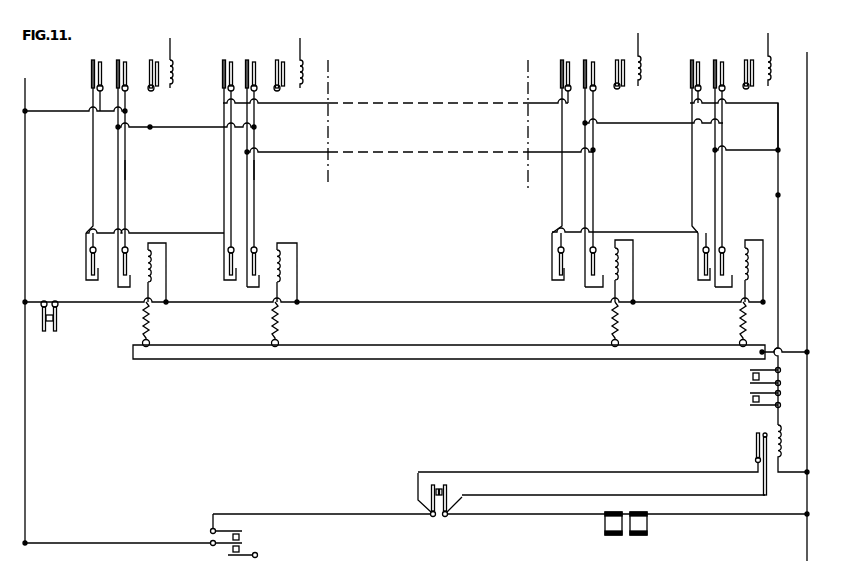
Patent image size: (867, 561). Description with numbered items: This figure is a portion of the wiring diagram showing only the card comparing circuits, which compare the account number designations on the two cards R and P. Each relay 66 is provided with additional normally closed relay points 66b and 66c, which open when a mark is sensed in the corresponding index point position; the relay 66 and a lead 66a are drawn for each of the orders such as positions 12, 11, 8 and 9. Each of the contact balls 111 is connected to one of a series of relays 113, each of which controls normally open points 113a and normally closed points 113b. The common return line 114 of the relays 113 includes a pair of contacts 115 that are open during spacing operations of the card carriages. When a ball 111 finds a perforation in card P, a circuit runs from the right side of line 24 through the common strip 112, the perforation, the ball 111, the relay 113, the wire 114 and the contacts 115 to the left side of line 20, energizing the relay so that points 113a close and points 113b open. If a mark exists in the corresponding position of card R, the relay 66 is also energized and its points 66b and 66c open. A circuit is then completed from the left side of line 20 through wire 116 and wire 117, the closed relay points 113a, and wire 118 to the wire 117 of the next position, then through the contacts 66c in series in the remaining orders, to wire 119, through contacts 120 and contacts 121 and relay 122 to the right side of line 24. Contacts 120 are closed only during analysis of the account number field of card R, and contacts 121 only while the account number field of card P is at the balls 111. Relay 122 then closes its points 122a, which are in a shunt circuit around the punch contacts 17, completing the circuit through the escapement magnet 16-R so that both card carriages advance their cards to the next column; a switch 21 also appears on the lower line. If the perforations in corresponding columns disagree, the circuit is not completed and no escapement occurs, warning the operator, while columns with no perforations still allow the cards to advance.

The index point position 12 is at (120, 134).
The index point position 11 is at (250, 62).
The index point position 8 is at (596, 153).
The index point position 9 is at (731, 153).
The relay 66 is at (176, 72).
The relay lead 66a is at (154, 60).
The normally closed relay points 66b is at (93, 62).
The normally closed relay points 66c is at (118, 62).
The wire 116 is at (63, 112).
The wire 117 is at (126, 171).
The wire 118 is at (151, 129).
The wire 119 is at (778, 195).
The relay 113 is at (152, 258).
The normally open relay points 113a is at (133, 272).
The normally closed relay points 113b is at (90, 277).
The common return line 114 is at (189, 299).
The contacts 115 is at (50, 333).
The contact balls 111 is at (272, 342).
The common strip 112 is at (213, 358).
The contacts 120 is at (748, 378).
The contacts 121 is at (748, 400).
The relay 122 is at (783, 470).
The relay points 122a is at (756, 442).
The punch contacts 17 is at (439, 485).
The line 20 is at (26, 399).
The switch 21 is at (246, 532).
The line 24 is at (806, 286).
The escapement magnet 16-R is at (608, 526).